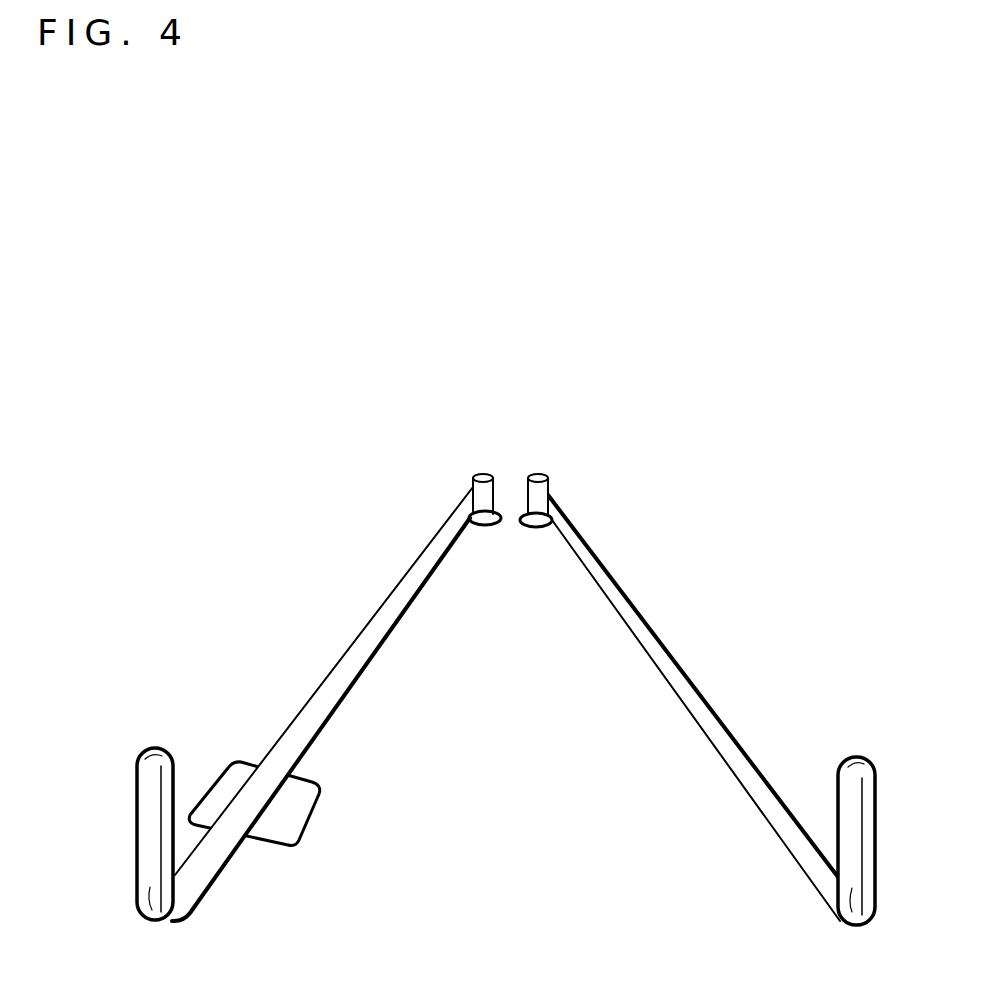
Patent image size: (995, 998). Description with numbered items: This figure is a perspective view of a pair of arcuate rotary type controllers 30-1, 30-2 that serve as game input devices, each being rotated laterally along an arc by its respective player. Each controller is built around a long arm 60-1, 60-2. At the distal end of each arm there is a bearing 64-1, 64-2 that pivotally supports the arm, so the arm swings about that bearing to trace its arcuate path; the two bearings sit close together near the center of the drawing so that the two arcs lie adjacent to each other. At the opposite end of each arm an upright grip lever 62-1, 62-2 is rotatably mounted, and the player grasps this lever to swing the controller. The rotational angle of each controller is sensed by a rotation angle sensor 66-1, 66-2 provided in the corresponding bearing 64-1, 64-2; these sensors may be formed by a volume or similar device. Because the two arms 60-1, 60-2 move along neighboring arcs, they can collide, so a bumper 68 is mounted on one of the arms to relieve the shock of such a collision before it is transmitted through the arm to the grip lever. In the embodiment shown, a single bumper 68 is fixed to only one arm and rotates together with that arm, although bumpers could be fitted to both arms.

The controller 30-1 is at (308, 660).
The controller 30-2 is at (676, 665).
The arm 60-1 is at (400, 587).
The arm 60-2 is at (714, 727).
The grip lever 62-1 is at (143, 918).
The grip lever 62-2 is at (840, 925).
The bearing 64-1 is at (487, 527).
The bearing 64-2 is at (538, 528).
The rotation angle sensor 66-1 is at (481, 472).
The rotation angle sensor 66-2 is at (539, 472).
The bumper 68 is at (300, 815).